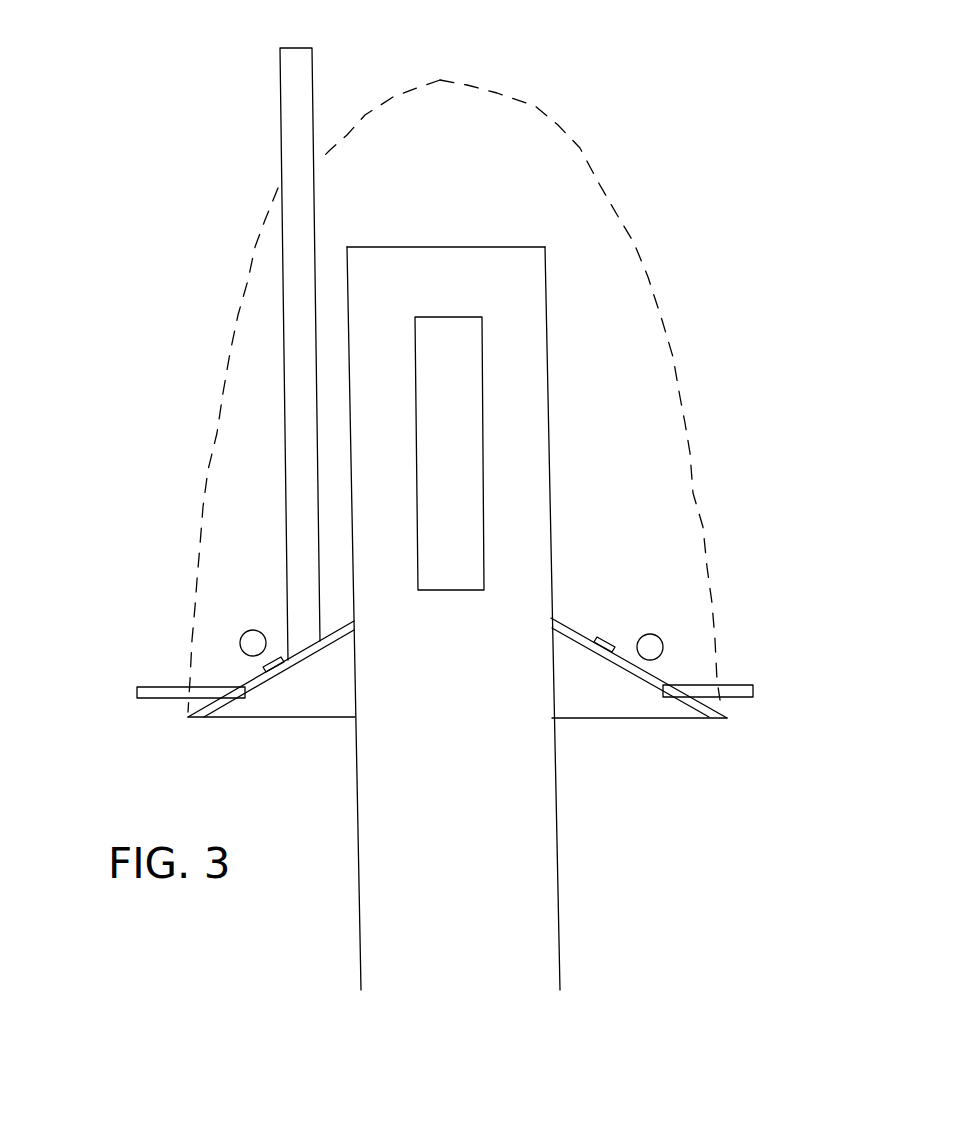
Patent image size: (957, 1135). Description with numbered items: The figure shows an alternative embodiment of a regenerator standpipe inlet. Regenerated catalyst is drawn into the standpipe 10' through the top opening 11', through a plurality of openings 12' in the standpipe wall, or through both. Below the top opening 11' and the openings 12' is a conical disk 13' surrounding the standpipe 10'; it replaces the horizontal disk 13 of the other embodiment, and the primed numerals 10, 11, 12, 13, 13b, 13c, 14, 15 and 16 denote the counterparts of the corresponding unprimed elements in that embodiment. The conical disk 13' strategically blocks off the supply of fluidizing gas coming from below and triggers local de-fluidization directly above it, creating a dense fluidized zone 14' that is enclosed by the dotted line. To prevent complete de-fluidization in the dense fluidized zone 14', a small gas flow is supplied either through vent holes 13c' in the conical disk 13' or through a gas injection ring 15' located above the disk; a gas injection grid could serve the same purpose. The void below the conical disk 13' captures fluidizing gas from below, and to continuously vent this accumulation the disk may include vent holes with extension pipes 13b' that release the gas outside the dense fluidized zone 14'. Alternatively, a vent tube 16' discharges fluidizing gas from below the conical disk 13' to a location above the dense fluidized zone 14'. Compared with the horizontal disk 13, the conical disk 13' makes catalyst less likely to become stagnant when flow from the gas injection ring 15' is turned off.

The standpipe 10' is at (453, 618).
The top opening 11' is at (446, 222).
The openings 12' is at (449, 453).
The conical disk 13' is at (639, 620).
The vent holes with extension pipes 13b' is at (446, 659).
The vent holes 13c' is at (475, 666).
The dense fluidized zone 14' is at (454, 396).
The gas injection ring 15' is at (445, 628).
The vent tube 16' is at (292, 332).
The post / column 10 is at (453, 618).
The upper end of post 11 is at (446, 222).
The slot in post 12 is at (449, 453).
The horizontal disk 13 is at (639, 620).
The base plate 13b is at (446, 659).
The stop block on support bar 13c is at (475, 666).
The swing path (dashed arc) 14 is at (454, 396).
The pivot pin 15 is at (445, 628).
The arm / rod 16 is at (292, 332).